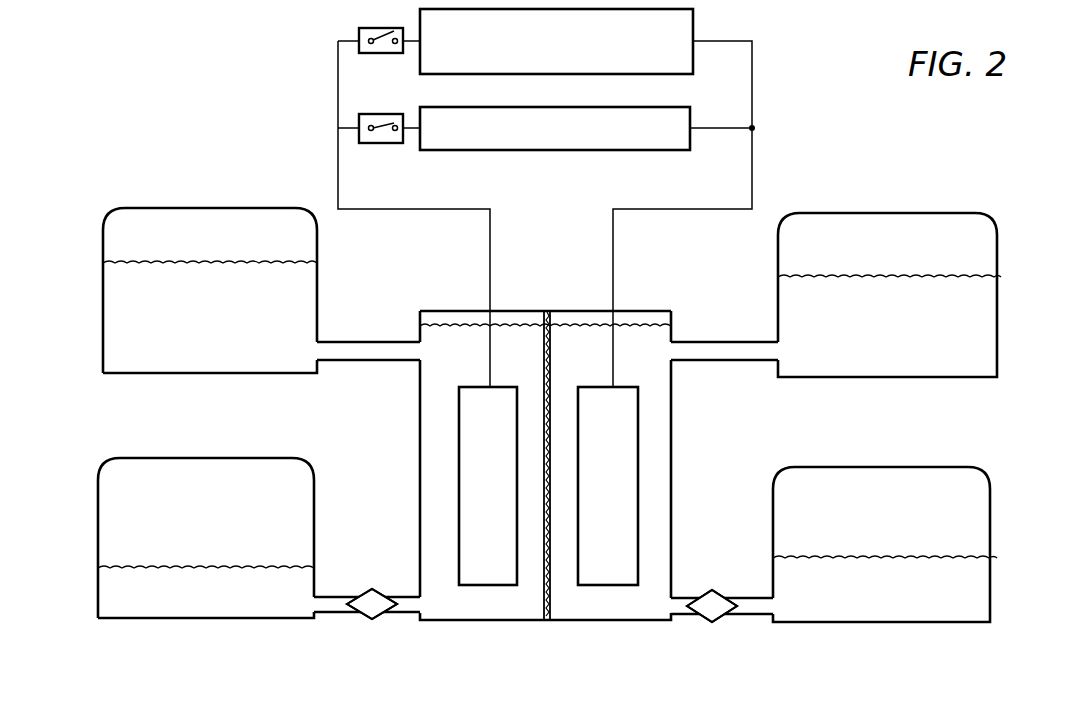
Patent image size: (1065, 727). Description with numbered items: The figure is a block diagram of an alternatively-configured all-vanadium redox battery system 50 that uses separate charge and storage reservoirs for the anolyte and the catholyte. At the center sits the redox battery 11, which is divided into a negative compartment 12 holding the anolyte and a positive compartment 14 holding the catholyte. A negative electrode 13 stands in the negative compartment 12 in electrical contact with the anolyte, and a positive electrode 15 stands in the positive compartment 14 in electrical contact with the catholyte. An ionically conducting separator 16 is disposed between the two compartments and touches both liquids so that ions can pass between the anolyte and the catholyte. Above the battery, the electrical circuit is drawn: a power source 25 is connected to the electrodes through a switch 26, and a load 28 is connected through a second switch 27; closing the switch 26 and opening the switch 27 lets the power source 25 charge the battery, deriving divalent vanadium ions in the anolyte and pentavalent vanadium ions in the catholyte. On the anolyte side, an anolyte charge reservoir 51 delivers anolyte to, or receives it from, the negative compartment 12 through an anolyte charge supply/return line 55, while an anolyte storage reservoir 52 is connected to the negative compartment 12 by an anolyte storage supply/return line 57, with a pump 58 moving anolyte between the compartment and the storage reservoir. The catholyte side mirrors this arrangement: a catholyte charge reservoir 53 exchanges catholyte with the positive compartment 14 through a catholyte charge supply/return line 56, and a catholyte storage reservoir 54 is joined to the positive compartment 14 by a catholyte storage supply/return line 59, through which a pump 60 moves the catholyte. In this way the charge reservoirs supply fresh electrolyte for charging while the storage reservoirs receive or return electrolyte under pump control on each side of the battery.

The redox battery 11 is at (660, 622).
The negative compartment 12 is at (472, 617).
The negative electrode 13 is at (468, 437).
The positive compartment 14 is at (600, 617).
The positive electrode 15 is at (632, 425).
The ionically conducting separator 16 is at (555, 322).
The power source 25 is at (690, 28).
The switch 26 is at (359, 32).
The switch 27 is at (363, 137).
The load 28 is at (692, 118).
The all-vanadium redox battery system 50 is at (242, 120).
The anolyte charge reservoir 51 is at (136, 210).
The anolyte storage reservoir 52 is at (140, 457).
The catholyte charge reservoir 53 is at (878, 212).
The catholyte storage reservoir 54 is at (878, 466).
The anolyte charge supply/return line 55 is at (352, 340).
The catholyte charge supply/return line 56 is at (697, 340).
The anolyte storage supply/return line 57 is at (323, 595).
The pump 58 is at (372, 617).
The catholyte storage supply/return line 59 is at (753, 597).
The pump 60 is at (718, 612).